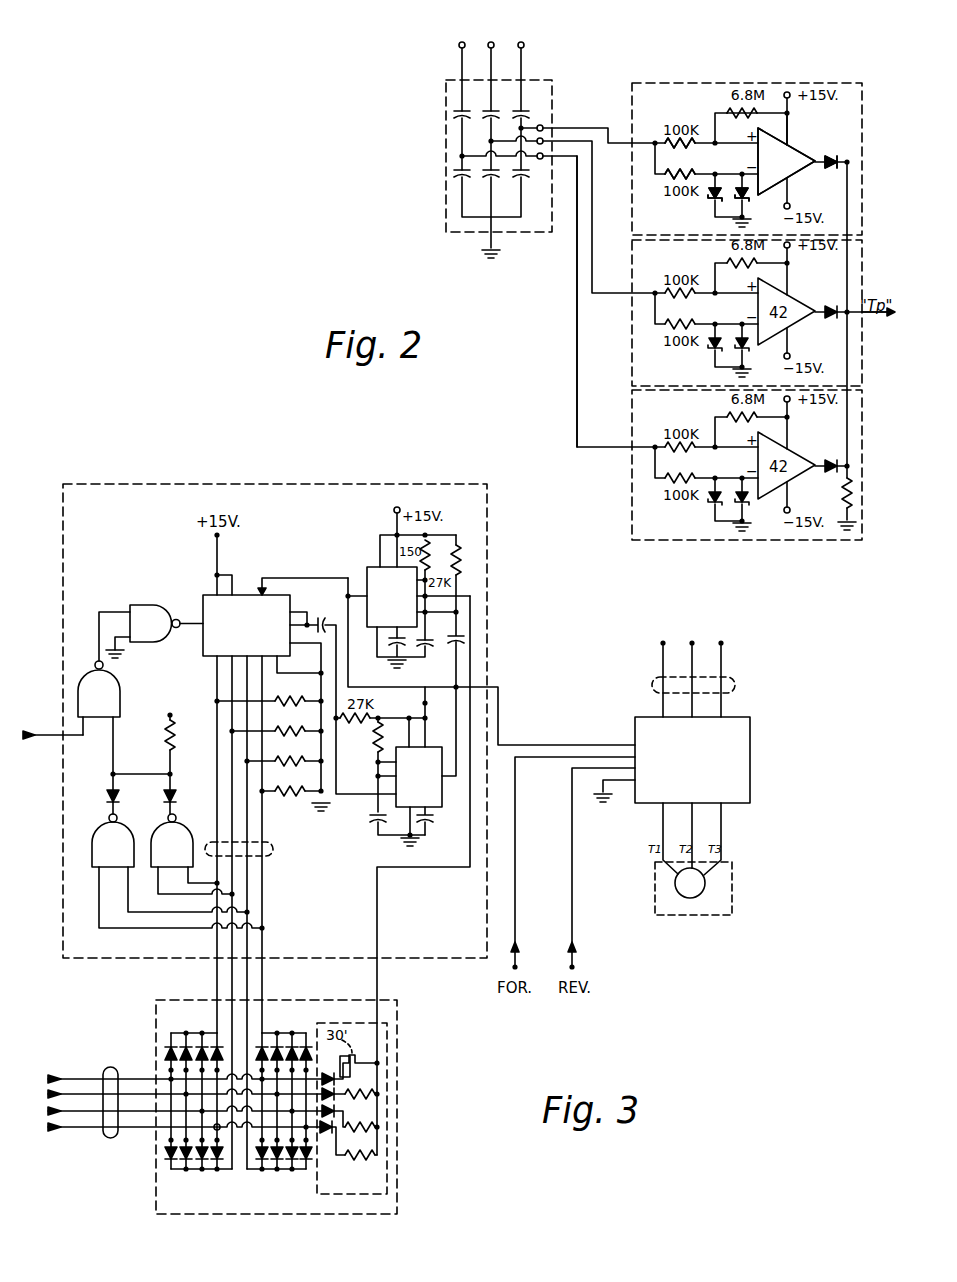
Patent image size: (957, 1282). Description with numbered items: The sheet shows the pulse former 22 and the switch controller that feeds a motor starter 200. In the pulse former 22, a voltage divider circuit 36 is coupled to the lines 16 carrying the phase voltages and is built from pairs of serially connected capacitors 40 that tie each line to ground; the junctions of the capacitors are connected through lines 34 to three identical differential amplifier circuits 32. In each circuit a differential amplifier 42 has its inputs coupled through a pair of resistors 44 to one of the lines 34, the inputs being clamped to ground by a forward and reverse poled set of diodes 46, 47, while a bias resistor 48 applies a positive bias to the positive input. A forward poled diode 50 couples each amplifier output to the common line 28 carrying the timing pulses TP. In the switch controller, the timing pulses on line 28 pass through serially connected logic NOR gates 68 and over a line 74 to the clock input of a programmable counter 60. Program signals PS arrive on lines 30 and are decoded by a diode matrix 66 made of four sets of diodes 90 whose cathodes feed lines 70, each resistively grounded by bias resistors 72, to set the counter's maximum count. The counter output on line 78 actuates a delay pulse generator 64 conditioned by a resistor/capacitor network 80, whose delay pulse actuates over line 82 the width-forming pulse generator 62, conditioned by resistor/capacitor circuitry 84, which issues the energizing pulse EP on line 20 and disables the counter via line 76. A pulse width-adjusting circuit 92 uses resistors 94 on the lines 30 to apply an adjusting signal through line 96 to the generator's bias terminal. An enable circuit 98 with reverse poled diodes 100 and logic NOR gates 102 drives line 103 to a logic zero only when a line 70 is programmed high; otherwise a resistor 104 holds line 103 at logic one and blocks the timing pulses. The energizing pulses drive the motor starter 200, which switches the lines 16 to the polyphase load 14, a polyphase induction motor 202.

In FIG. 3, the polyphase load 14 is at (745, 914).
In FIG. 2, the lines 16 is at (516, 57).
In FIG. 3, the lines 16 is at (737, 686).
In FIG. 3, the line 20 is at (503, 713).
In FIG. 2, the pulse former 22 is at (568, 288).
In FIG. 2, the line 28 is at (865, 318).
In FIG. 3, the line 28 is at (48, 735).
In FIG. 3, the lines 30 is at (110, 1067).
In FIG. 2, the differential amplifier circuits 32 is at (836, 83).
In FIG. 2, the lines 34 is at (556, 150).
In FIG. 2, the voltage divider circuit 36 is at (541, 80).
In FIG. 2, the capacitors 40 is at (520, 106).
In FIG. 2, the differential amplifier 42 is at (786, 161).
In FIG. 2, the resistors 44 is at (678, 158).
In FIG. 2, the diode 46 is at (708, 202).
In FIG. 2, the diode 47 is at (748, 201).
In FIG. 2, the bias resistor 48 is at (789, 115).
In FIG. 2, the diode 50 is at (833, 168).
In FIG. 3, the programmable counter 60 is at (236, 594).
In FIG. 3, the width-forming pulse generator 62 is at (372, 567).
In FIG. 3, the delay pulse generator 64 is at (441, 808).
In FIG. 3, the diode matrix 66 is at (290, 1214).
In FIG. 3, the logic NOR gates 68 is at (120, 690).
In FIG. 3, the lines 70 is at (272, 853).
In FIG. 3, the bias resistors 72 is at (285, 800).
In FIG. 3, the line 74 is at (179, 619).
In FIG. 3, the line 76 is at (303, 578).
In FIG. 3, the line 78 is at (352, 797).
In FIG. 3, the resistor/capacitor network 80 is at (378, 742).
In FIG. 3, the line 82 is at (453, 728).
In FIG. 3, the resistor/capacitor circuitry 84 is at (453, 556).
In FIG. 3, the diodes 90 is at (202, 1033).
In FIG. 3, the pulse width-adjusting circuit 92 is at (387, 1182).
In FIG. 3, the resistors 94 is at (366, 1150).
In FIG. 3, the line 96 is at (379, 912).
In FIG. 3, the enable circuit 98 is at (88, 878).
In FIG. 3, the diode 100 is at (168, 790).
In FIG. 3, the logic NOR gate 102 is at (96, 836).
In FIG. 3, the line 103 is at (100, 748).
In FIG. 3, the resistor 104 is at (173, 756).
In FIG. 3, the motor starter 200 is at (750, 771).
In FIG. 3, the polyphase induction motor 202 is at (706, 884).